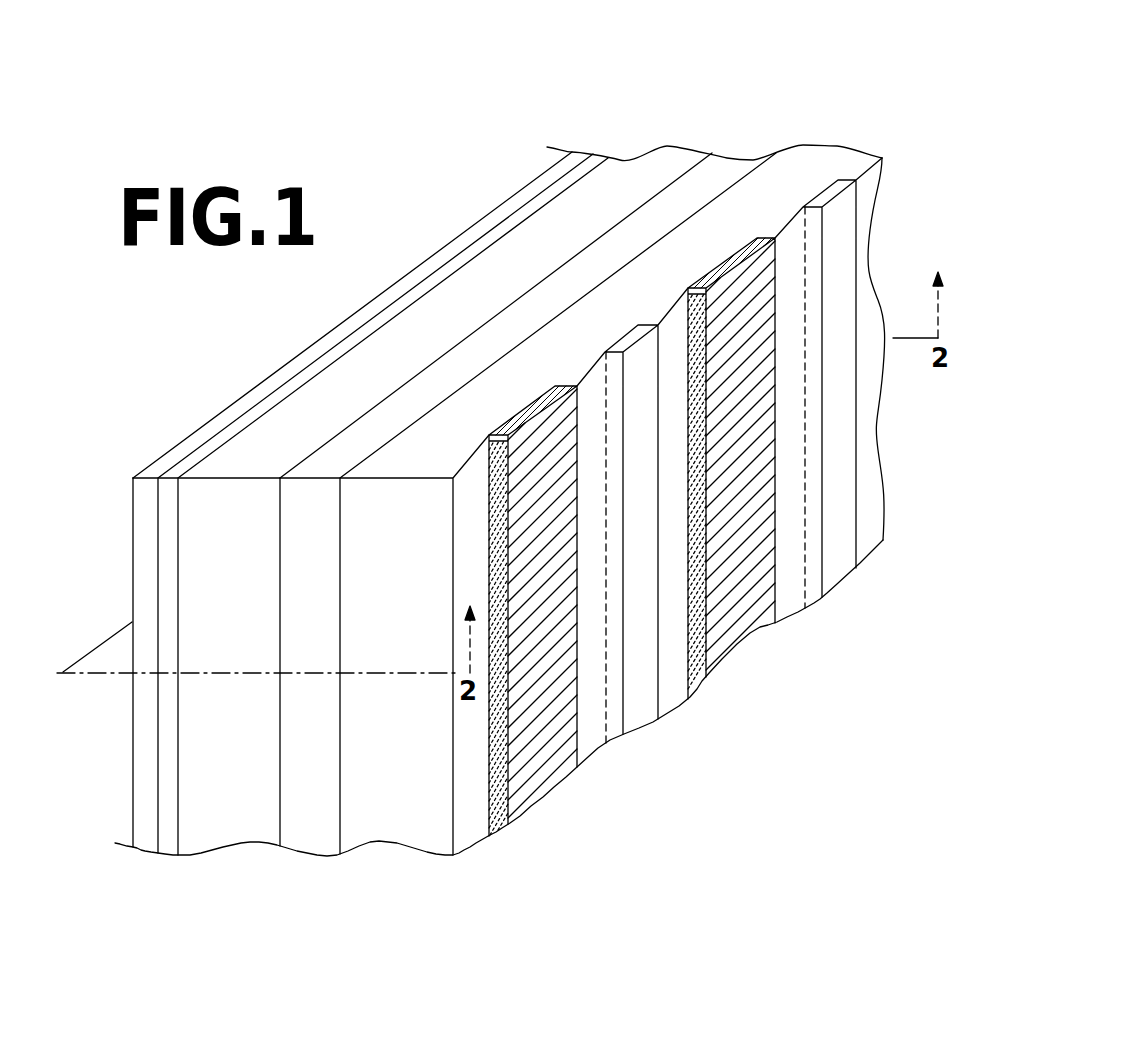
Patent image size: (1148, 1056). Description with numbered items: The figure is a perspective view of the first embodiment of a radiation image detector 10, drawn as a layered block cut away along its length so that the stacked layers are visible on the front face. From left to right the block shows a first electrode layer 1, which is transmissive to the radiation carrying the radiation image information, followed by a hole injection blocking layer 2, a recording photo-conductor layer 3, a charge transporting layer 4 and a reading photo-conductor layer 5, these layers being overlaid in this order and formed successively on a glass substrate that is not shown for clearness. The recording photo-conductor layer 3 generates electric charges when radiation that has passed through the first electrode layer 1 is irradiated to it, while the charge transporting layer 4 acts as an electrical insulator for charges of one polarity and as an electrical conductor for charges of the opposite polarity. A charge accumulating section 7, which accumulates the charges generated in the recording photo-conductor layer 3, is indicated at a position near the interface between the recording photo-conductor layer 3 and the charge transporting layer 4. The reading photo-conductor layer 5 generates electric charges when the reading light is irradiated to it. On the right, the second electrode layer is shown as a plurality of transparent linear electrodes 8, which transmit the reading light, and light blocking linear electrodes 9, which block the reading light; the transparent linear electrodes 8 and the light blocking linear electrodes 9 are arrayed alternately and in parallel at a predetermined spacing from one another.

The first electrode layer 1 is at (150, 836).
The hole injection blocking layer 2 is at (172, 836).
The recording photo-conductor layer 3 is at (198, 829).
The charge transporting layer 4 is at (315, 829).
The reading photo-conductor layer 5 is at (393, 831).
The charge accumulating section 7 is at (279, 825).
The transparent linear electrodes 8 is at (645, 712).
The light blocking linear electrodes 9 is at (550, 783).
The radiation image detector 10 is at (758, 94).